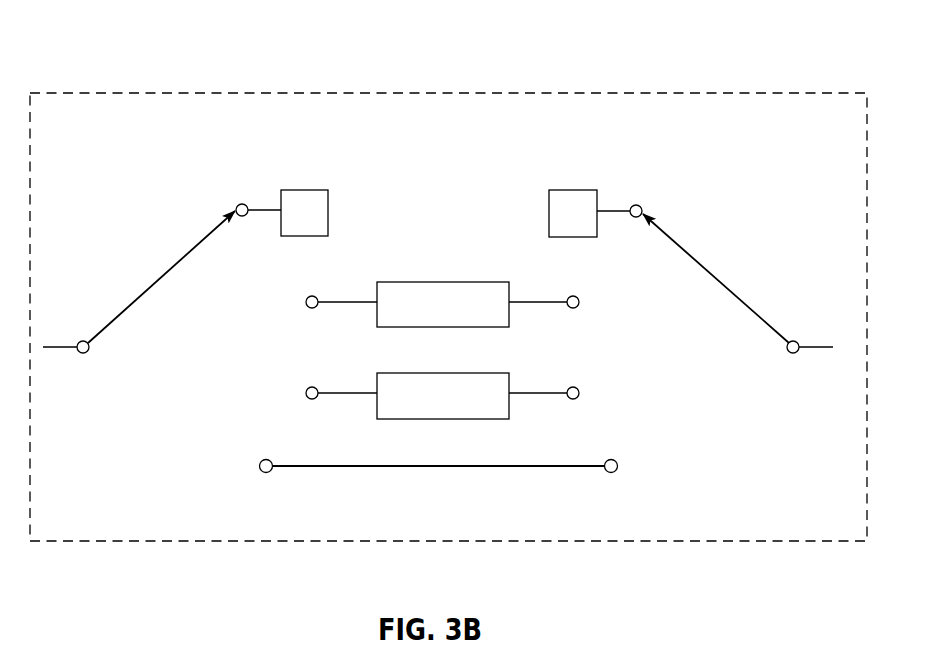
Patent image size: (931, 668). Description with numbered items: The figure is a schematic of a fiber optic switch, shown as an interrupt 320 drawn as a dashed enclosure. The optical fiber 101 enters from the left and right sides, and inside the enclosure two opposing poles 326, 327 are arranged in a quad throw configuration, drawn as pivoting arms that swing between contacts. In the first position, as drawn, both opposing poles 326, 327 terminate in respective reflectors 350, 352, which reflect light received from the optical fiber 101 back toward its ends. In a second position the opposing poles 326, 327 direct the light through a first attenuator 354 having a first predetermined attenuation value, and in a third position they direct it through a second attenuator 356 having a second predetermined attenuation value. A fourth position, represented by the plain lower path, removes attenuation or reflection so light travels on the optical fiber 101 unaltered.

The interrupt 320 is at (463, 90).
The optical fiber 101 is at (66, 346).
The opposing pole 326 is at (160, 281).
The opposing pole 327 is at (715, 281).
The reflector 350 is at (302, 190).
The reflector 352 is at (573, 190).
The first attenuator 354 is at (443, 282).
The second attenuator 356 is at (443, 373).